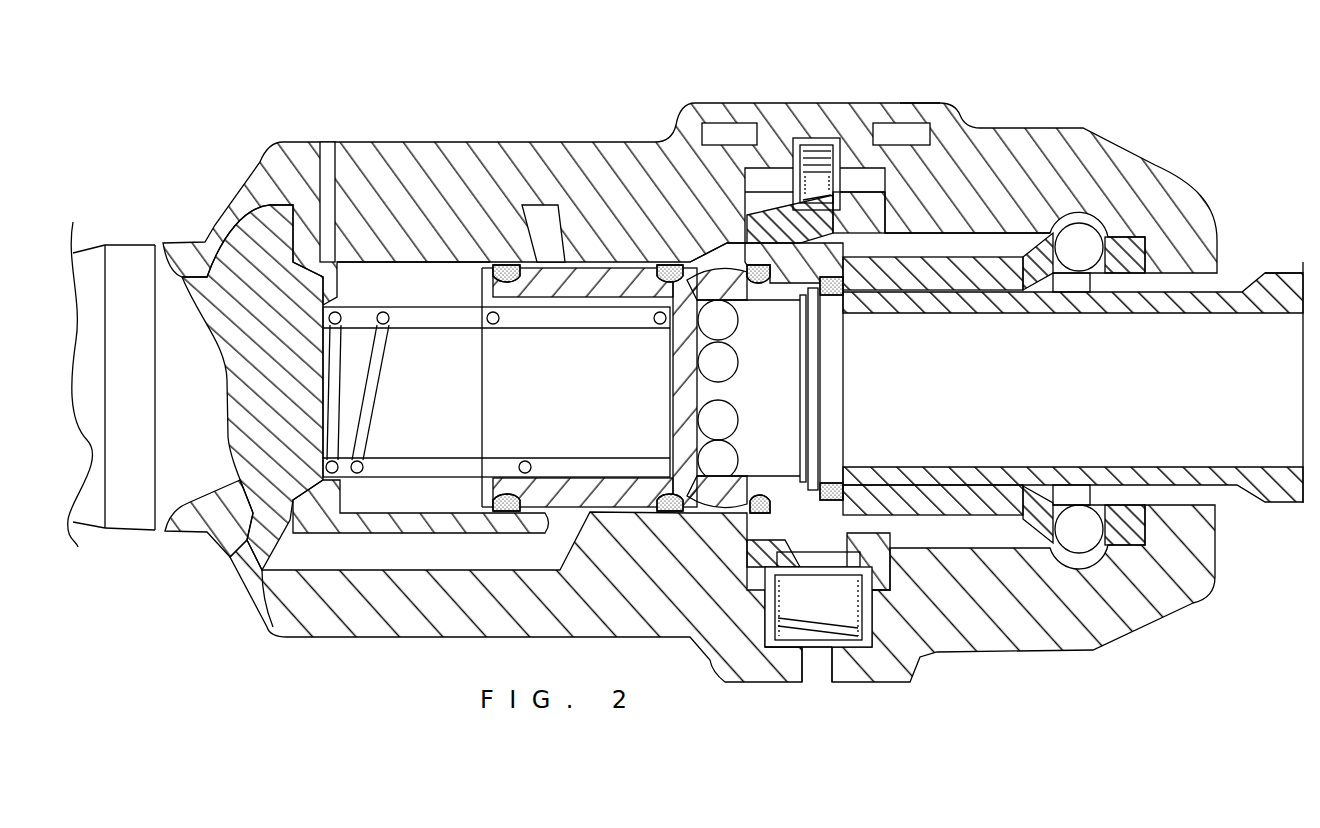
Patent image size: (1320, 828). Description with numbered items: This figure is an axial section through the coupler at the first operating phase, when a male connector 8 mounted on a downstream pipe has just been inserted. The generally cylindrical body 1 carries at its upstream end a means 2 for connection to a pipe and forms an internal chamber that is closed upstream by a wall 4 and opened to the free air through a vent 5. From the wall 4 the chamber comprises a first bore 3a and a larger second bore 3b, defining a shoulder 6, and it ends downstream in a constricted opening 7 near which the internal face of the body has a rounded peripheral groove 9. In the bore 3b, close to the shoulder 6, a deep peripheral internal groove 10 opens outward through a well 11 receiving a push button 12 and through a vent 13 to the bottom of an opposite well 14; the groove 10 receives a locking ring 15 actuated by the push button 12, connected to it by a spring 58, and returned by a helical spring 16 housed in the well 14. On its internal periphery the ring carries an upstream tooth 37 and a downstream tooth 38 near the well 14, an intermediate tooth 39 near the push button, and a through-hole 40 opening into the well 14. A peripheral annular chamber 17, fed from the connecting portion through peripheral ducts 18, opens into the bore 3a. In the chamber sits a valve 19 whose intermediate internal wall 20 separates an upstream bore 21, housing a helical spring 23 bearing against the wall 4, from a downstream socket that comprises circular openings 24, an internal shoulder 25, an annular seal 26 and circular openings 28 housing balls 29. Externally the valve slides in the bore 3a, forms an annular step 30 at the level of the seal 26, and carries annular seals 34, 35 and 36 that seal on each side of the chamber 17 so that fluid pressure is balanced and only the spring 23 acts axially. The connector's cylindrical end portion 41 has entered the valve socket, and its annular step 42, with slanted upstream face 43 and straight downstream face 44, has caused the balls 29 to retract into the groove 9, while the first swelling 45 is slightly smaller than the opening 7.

The body 1 is at (459, 150).
The means for connection to a pipe 2 is at (133, 268).
The first bore 3a is at (393, 273).
The second bore 3b is at (972, 243).
The wall 4 is at (273, 322).
The vent 5 is at (328, 146).
The shoulder 6 is at (718, 258).
The opening 7 is at (1220, 273).
The male connector 8 is at (1285, 492).
The peripheral groove 9 is at (1097, 228).
The peripheral internal groove 10 is at (771, 182).
The well 11 is at (884, 136).
The push button 12 is at (915, 112).
The vent 13 is at (823, 675).
The well 14 is at (800, 613).
The locking ring 15 is at (885, 595).
The helical spring 16 is at (772, 647).
The peripheral annular chamber 17 is at (543, 212).
The peripheral ducts 18 is at (445, 567).
The valve 19 is at (967, 510).
The intermediate internal wall 20 is at (672, 350).
The upstream bore 21 is at (575, 429).
The helical spring 23 is at (392, 325).
The circular openings 24 is at (730, 362).
The internal shoulder 25 is at (803, 393).
The annular seal 26 is at (843, 490).
The circular openings 28 is at (1103, 513).
The balls 29 is at (1072, 517).
The annular step 30 is at (870, 257).
The annular seal 34 is at (490, 276).
The annular seal 35 is at (657, 277).
The annular seal 36 is at (768, 283).
The upstream tooth 37 is at (757, 555).
The downstream tooth 38 is at (853, 555).
The intermediate tooth 39 is at (818, 242).
The through-hole 40 is at (827, 558).
The cylindrical end portion 41 is at (908, 305).
The annular step 42 is at (1073, 302).
The upstream face 43 is at (1048, 295).
The downstream face 44 is at (1092, 280).
The first swelling 45 is at (1275, 293).
The spring 58 is at (804, 143).